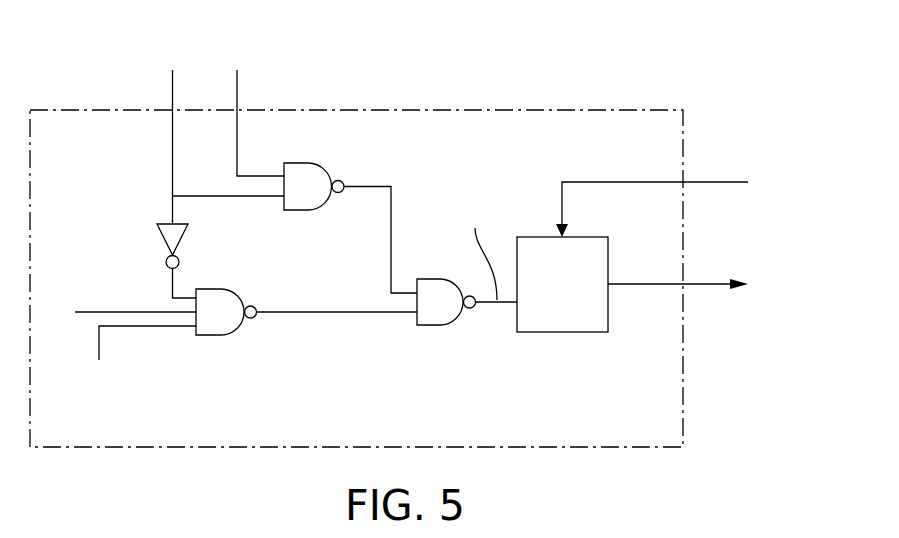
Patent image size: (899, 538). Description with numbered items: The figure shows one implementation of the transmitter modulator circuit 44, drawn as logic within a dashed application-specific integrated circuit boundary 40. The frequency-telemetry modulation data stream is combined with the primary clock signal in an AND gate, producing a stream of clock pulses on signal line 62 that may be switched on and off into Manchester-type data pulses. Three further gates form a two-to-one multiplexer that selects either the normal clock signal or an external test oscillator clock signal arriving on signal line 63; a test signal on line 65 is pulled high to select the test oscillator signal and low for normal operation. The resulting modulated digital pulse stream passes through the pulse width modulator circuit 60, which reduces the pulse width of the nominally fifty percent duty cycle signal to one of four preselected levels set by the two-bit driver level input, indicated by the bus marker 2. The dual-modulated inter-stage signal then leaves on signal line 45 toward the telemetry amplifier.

The drive level bus (2 bits) 2 is at (627, 172).
The BTE ASIC 40 is at (530, 110).
The transmitter modulator circuit (TX MOD) 44 is at (670, 77).
The signal line 45 is at (710, 285).
The pulse width modulator (PWM) circuit 60 is at (573, 316).
The signal line 62 is at (488, 304).
The signal line 63 is at (237, 137).
The line 65 is at (172, 148).